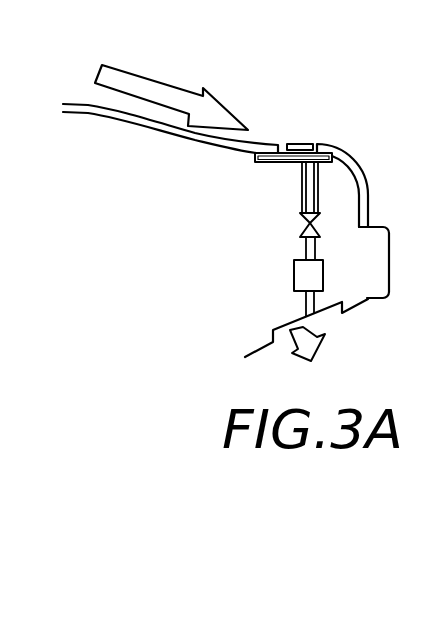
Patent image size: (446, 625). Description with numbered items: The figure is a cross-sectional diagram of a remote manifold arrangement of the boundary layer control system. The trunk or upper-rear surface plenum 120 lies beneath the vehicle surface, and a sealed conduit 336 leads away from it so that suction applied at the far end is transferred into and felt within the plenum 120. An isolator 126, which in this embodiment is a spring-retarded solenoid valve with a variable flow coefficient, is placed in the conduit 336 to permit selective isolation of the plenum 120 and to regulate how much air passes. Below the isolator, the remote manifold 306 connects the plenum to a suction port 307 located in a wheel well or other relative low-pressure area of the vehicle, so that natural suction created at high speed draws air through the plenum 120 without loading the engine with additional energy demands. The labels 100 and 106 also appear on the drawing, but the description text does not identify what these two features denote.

The boundary layer suction port assembly 100 is at (314, 124).
The vehicle surface skin / panel 106 is at (282, 120).
The plenum 120 is at (266, 163).
The isolator 126 is at (299, 222).
The remote manifold 306 is at (293, 272).
The suction port 307 is at (338, 329).
The sealed conduit 336 is at (300, 195).